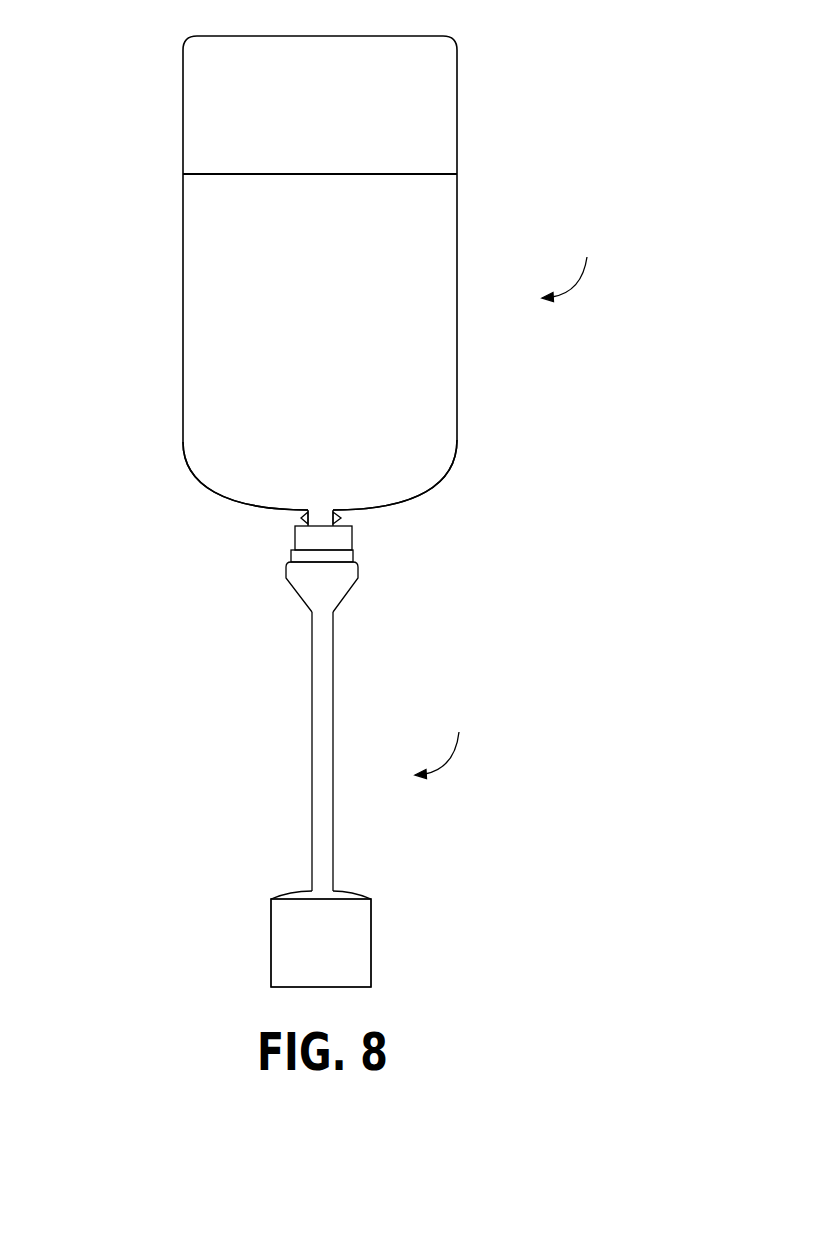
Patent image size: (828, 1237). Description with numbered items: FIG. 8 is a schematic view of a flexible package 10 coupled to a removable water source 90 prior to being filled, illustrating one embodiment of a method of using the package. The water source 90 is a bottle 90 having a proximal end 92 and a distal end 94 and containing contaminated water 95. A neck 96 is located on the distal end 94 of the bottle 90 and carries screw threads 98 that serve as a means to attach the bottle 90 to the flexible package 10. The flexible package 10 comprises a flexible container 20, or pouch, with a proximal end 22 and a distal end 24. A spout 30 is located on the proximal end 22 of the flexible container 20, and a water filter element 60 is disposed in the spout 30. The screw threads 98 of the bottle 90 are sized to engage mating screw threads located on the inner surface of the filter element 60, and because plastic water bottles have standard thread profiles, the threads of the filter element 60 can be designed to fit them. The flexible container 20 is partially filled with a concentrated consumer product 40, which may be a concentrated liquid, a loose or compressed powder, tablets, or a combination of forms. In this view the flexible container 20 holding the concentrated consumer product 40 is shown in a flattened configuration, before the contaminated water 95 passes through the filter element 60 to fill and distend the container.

The flexible package 10 is at (446, 732).
The flexible container 20 is at (311, 747).
The proximal end 22 is at (280, 597).
The distal end 24 is at (383, 920).
The spout 30 is at (298, 557).
The concentrated consumer product 40 is at (295, 943).
The water filter element 60 is at (340, 540).
The water source 90 is at (573, 256).
The proximal end of bottle 92 is at (488, 64).
The distal end of bottle 94 is at (463, 476).
The contaminated water 95 is at (293, 399).
The neck 96 is at (312, 522).
The screw threads 98 is at (338, 517).